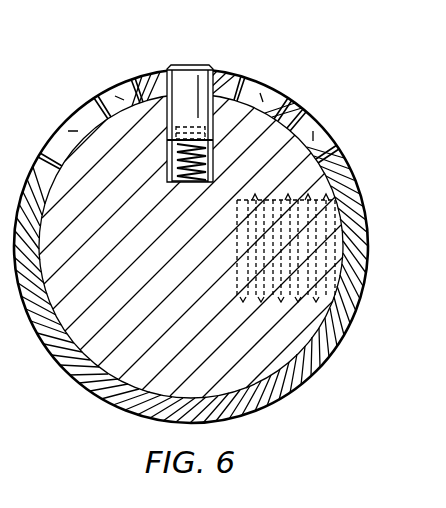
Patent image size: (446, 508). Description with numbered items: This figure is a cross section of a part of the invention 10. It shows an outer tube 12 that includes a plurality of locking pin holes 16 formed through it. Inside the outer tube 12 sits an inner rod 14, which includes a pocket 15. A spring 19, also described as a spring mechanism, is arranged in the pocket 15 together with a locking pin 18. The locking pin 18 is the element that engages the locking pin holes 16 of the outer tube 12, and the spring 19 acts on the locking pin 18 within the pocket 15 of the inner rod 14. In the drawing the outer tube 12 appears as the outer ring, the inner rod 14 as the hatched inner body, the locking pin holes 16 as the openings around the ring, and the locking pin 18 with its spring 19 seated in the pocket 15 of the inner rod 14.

The invention 10 is at (66, 70).
The outer tube 12 is at (370, 212).
The inner rod 14 is at (103, 380).
The pocket 15 is at (213, 168).
The locking pin holes 16 is at (56, 145).
The locking pin 18 is at (192, 103).
The spring 19 is at (167, 160).